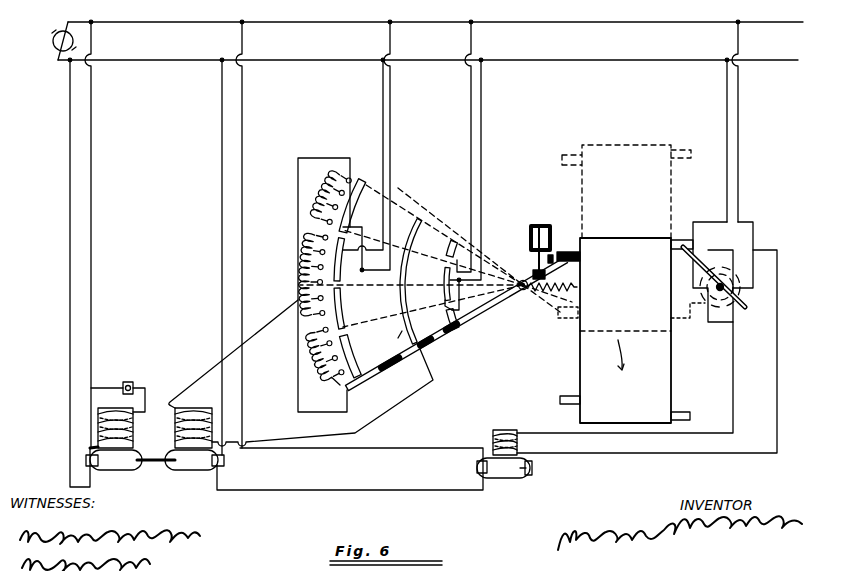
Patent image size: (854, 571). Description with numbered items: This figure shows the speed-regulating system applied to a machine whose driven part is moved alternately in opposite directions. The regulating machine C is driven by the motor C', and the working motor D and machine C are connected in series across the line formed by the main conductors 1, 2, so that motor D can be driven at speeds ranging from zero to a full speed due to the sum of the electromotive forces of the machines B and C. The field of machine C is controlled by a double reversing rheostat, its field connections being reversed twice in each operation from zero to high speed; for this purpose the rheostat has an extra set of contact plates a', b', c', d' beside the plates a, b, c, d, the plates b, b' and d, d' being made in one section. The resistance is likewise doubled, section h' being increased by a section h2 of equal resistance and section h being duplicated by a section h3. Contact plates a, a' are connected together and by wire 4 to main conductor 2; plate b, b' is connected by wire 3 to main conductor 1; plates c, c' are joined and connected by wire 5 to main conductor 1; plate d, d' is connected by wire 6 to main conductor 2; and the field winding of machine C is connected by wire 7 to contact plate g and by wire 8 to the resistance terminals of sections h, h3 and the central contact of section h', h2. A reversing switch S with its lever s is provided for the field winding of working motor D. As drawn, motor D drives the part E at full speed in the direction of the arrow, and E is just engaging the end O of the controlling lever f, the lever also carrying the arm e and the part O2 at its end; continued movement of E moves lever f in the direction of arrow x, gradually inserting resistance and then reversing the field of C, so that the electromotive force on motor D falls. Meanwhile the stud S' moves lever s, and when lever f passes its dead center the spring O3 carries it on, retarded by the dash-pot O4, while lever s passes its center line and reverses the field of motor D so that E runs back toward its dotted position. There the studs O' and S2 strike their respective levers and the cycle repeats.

The main conductor 1 is at (428, 52).
The main conductor 2 is at (435, 14).
The wire 3 is at (363, 155).
The wire 4 is at (373, 147).
The wire 5 is at (472, 185).
The wire 6 is at (462, 147).
The wire 7 is at (322, 397).
The wire 8 is at (233, 354).
The machine B is at (54, 36).
The regulating machine C is at (194, 450).
The motor C' is at (130, 437).
The working motor D is at (374, 468).
The movable part E is at (626, 284).
The reversing switch S is at (647, 337).
The stud S' is at (682, 236).
The stud S2 is at (683, 403).
The end of controlling lever O is at (549, 250).
The stud O' is at (569, 390).
The lever end bar O2 is at (570, 244).
The spring O3 is at (512, 305).
The dash-pot O4 is at (530, 247).
The contact plate a is at (355, 356).
The contact plate a' is at (357, 206).
The contact plate b is at (344, 308).
The contact plate b' is at (345, 259).
The contact plate c is at (445, 320).
The contact plate c' is at (443, 245).
The contact plate d is at (438, 299).
The contact plate d' is at (440, 282).
The lever arm e is at (457, 330).
The controlling lever f is at (448, 339).
The contact plate g is at (404, 282).
The resistance section h is at (324, 285).
The resistance section h' is at (321, 359).
The resistance section h2 is at (309, 265).
The resistance section h3 is at (322, 189).
The arrow x is at (406, 337).
The switch lever s is at (552, 278).